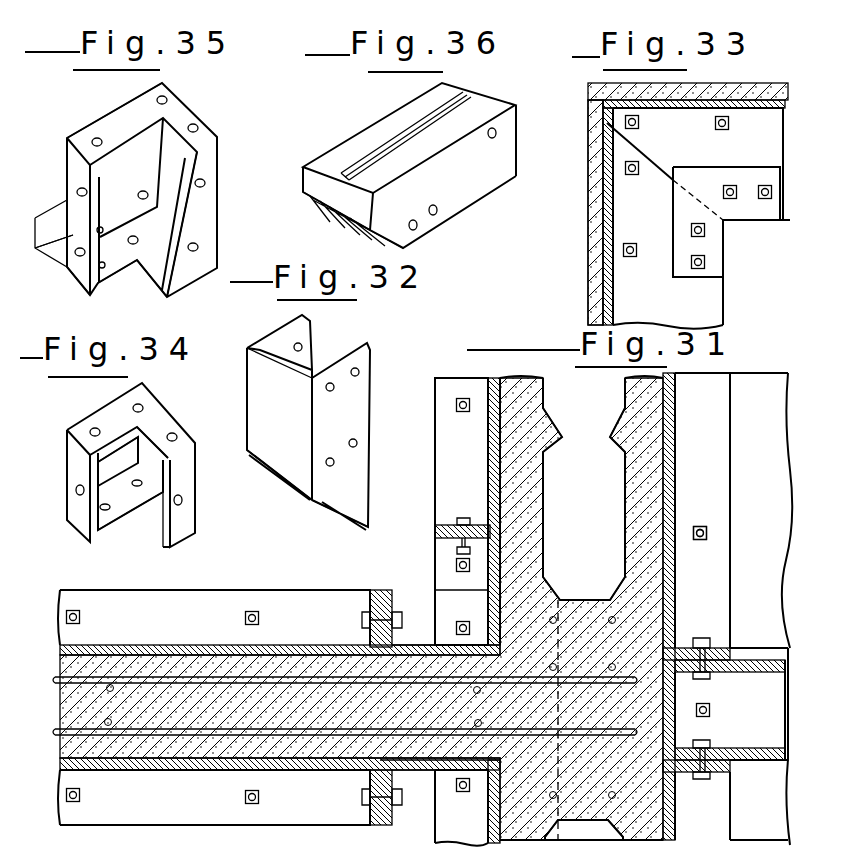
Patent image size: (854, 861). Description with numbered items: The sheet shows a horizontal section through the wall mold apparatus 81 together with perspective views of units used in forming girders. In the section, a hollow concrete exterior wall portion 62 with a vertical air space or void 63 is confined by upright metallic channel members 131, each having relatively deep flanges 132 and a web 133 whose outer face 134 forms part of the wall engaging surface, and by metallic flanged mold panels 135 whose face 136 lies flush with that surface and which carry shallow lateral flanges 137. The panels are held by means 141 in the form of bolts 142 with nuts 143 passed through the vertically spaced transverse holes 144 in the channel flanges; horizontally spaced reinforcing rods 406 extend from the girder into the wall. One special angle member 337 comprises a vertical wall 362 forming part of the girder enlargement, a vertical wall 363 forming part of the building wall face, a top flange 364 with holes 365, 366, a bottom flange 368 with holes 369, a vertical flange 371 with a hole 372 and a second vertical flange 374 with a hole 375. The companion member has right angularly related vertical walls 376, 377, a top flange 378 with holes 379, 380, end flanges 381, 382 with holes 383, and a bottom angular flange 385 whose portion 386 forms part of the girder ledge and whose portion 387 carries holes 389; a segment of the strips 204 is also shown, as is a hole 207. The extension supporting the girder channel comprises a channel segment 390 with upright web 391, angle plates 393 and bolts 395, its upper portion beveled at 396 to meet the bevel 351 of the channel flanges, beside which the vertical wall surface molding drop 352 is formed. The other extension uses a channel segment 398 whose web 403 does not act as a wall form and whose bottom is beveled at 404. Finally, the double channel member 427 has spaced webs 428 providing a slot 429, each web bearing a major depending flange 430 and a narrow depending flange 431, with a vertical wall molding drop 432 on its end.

In FIG. 31, the hollow concrete exterior wall portion 62 is at (650, 465).
In FIG. 31, the vertical air space or void 63 is at (584, 609).
In FIG. 31, the wall mold apparatus 81 is at (495, 375).
In FIG. 31, the upright metallic channel member 131 is at (790, 622).
In FIG. 31, the flange of channel member 132 is at (757, 668).
In FIG. 31, the web of channel member 133 is at (673, 730).
In FIG. 31, the outer face of web 134 is at (673, 688).
In FIG. 31, the metallic flanged mold panel 135 is at (702, 830).
In FIG. 31, the face of panel 136 is at (652, 797).
In FIG. 31, the lateral flange of panel 137 is at (718, 773).
In FIG. 31, the means for detachably securing each panel to the superjacent panel 141 is at (713, 537).
In FIG. 31, the bolt 142 is at (712, 527).
In FIG. 31, the nut 143 is at (705, 542).
In FIG. 31, the transverse hole 144 is at (688, 773).
In FIG. 35, the strip 204 is at (45, 215).
In FIG. 35, the bolt hole 207 is at (100, 225).
In FIG. 34, the special angle member 337 is at (145, 386).
In FIG. 31, the special angle member 337 is at (443, 838).
In FIG. 33, the bevel 351 is at (608, 145).
In FIG. 33, the vertical wall surface molding drop 352 is at (600, 118).
In FIG. 34, the vertical wall 362 is at (155, 470).
In FIG. 31, the vertical wall 362 is at (397, 642).
In FIG. 34, the vertical wall 363 is at (107, 463).
In FIG. 31, the vertical wall 363 is at (490, 580).
In FIG. 34, the top angular horizontally disposed flange 364 is at (160, 422).
In FIG. 34, the transverse hole 365 is at (93, 430).
In FIG. 34, the transverse hole 366 is at (178, 438).
In FIG. 34, the bottom horizontally disposed flange 368 is at (143, 510).
In FIG. 31, the bottom horizontally disposed flange 368 is at (480, 609).
In FIG. 34, the transverse hole 369 is at (137, 487).
In FIG. 34, the vertical flange 371 is at (80, 517).
In FIG. 34, the transverse hole 372 is at (80, 495).
In FIG. 34, the second vertical flange 374 is at (185, 530).
In FIG. 31, the second vertical flange 374 is at (385, 592).
In FIG. 34, the transverse hole 375 is at (182, 503).
In FIG. 35, the vertical wall 376 is at (203, 160).
In FIG. 35, the vertical wall 377 is at (100, 170).
In FIG. 35, the top angular horizontal flange 378 is at (117, 117).
In FIG. 35, the transverse hole 379 is at (195, 128).
In FIG. 35, the transverse hole 380 is at (95, 137).
In FIG. 35, the vertically disposed end flange 381 is at (205, 210).
In FIG. 35, the vertically disposed end flange 382 is at (73, 235).
In FIG. 35, the transverse hole 383 is at (198, 248).
In FIG. 35, the bottom horizontally disposed angular flange 385 is at (117, 288).
In FIG. 35, the portion of bottom flange 386 is at (145, 283).
In FIG. 35, the portion of bottom flange 387 is at (100, 285).
In FIG. 35, the transverse hole 389 is at (102, 263).
In FIG. 33, the channel segment 390 is at (715, 302).
In FIG. 33, the web of channel segment 391 is at (600, 305).
In FIG. 33, the angle plate 393 is at (728, 232).
In FIG. 33, the bolt 395 is at (705, 262).
In FIG. 33, the bevel 396 is at (647, 147).
In FIG. 32, the channel segment 398 is at (367, 345).
In FIG. 32, the web of channel segment 403 is at (300, 433).
In FIG. 32, the bevel 404 is at (295, 492).
In FIG. 31, the longitudinally extending rod 406 is at (178, 733).
In FIG. 36, the double channel member 427 is at (303, 165).
In FIG. 36, the web 428 is at (450, 124).
In FIG. 36, the slot 429 is at (380, 147).
In FIG. 36, the major depending flange 430 is at (455, 200).
In FIG. 36, the narrow depending flange 431 is at (335, 225).
In FIG. 36, the vertical wall molding drop 432 is at (305, 190).